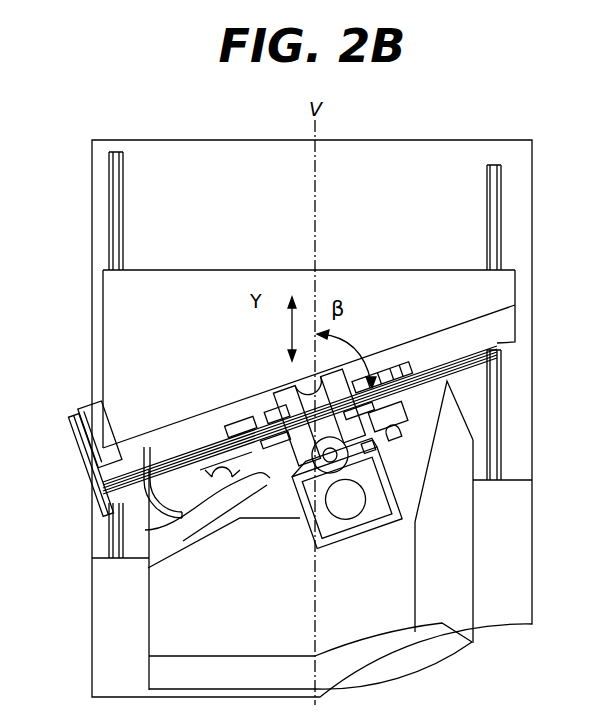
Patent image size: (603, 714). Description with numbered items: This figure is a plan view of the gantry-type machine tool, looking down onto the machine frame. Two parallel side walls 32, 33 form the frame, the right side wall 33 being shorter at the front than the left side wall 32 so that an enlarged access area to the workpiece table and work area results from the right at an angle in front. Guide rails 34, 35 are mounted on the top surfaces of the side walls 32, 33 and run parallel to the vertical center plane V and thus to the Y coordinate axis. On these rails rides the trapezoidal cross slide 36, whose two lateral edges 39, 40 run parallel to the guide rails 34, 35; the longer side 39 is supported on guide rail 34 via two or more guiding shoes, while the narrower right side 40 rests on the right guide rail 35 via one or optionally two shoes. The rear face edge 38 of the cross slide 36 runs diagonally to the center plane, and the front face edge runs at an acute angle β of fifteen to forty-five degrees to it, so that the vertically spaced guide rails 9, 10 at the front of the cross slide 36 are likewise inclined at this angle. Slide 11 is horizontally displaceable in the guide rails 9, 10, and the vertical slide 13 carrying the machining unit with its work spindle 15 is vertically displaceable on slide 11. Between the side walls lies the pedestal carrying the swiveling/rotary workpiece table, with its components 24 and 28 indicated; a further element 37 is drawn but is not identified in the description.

The guide rail 9 is at (150, 468).
The guide rail 10 is at (430, 363).
The slide 11 is at (380, 393).
The vertical slide 13 is at (287, 389).
The work spindle 15 is at (353, 512).
The pedestal component 24 is at (192, 532).
The pedestal component 28 is at (394, 437).
The side wall 32 is at (92, 340).
The side wall 33 is at (513, 448).
The guide rail 34 is at (109, 218).
The guide rail 35 is at (497, 208).
The cross slide 36 is at (190, 336).
The bearing element 37 is at (187, 470).
The rear face edge 38 is at (195, 270).
The lateral edge 39 is at (103, 300).
The lateral edge 40 is at (515, 287).